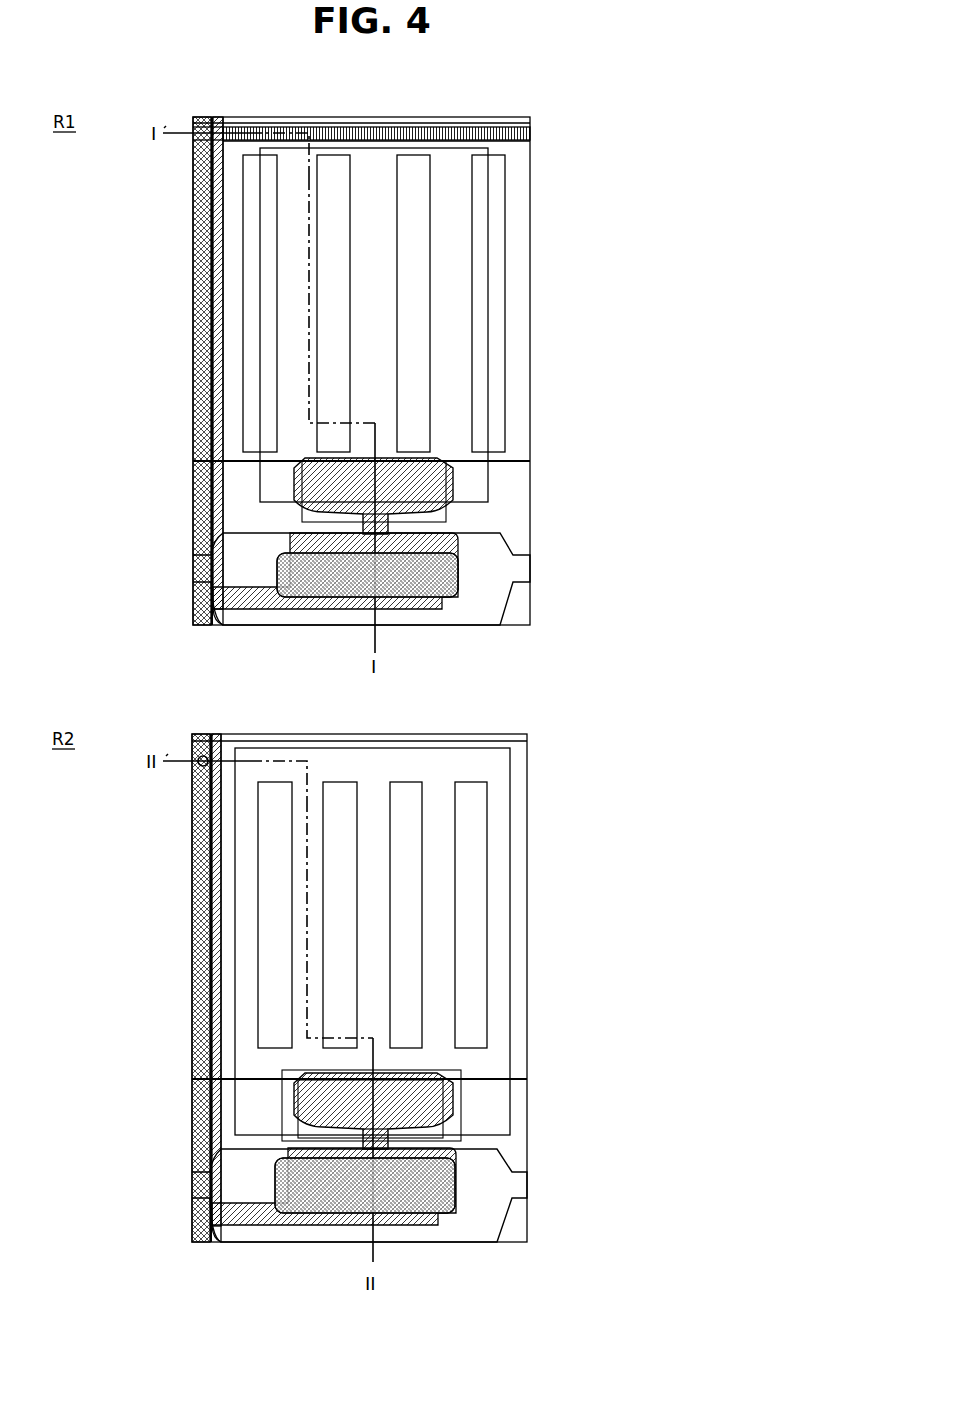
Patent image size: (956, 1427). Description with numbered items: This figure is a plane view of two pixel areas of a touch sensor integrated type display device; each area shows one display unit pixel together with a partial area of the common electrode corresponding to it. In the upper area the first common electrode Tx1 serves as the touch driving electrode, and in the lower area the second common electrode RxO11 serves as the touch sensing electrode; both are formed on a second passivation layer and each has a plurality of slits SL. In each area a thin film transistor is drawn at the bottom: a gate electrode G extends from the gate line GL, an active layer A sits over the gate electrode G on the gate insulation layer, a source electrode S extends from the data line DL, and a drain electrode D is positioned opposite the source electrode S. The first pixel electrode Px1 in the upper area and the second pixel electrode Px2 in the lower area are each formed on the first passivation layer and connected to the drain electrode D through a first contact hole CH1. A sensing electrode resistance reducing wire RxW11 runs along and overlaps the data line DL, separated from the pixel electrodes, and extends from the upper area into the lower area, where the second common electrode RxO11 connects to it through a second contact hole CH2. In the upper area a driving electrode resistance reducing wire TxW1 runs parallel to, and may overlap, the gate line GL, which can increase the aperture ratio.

The driving electrode resistance reducing wire TxW1 is at (534, 130).
The first common electrode serving as touch driving electrode Tx1 is at (518, 199).
The second common electrode serving as touch sensing electrode RxO11 is at (520, 815).
The slit SL is at (498, 307).
The drain electrode D is at (453, 475).
The first pixel electrode Px1 is at (480, 490).
The second pixel electrode Px2 is at (512, 1108).
The first contact hole CH1 is at (448, 509).
The second contact hole CH2 is at (196, 768).
The gate line GL is at (520, 566).
The data line DL is at (193, 503).
The sensing electrode resistance reducing wire RxW11 is at (201, 613).
The source electrode S is at (254, 604).
The active layer A is at (453, 603).
The gate electrode G is at (488, 612).